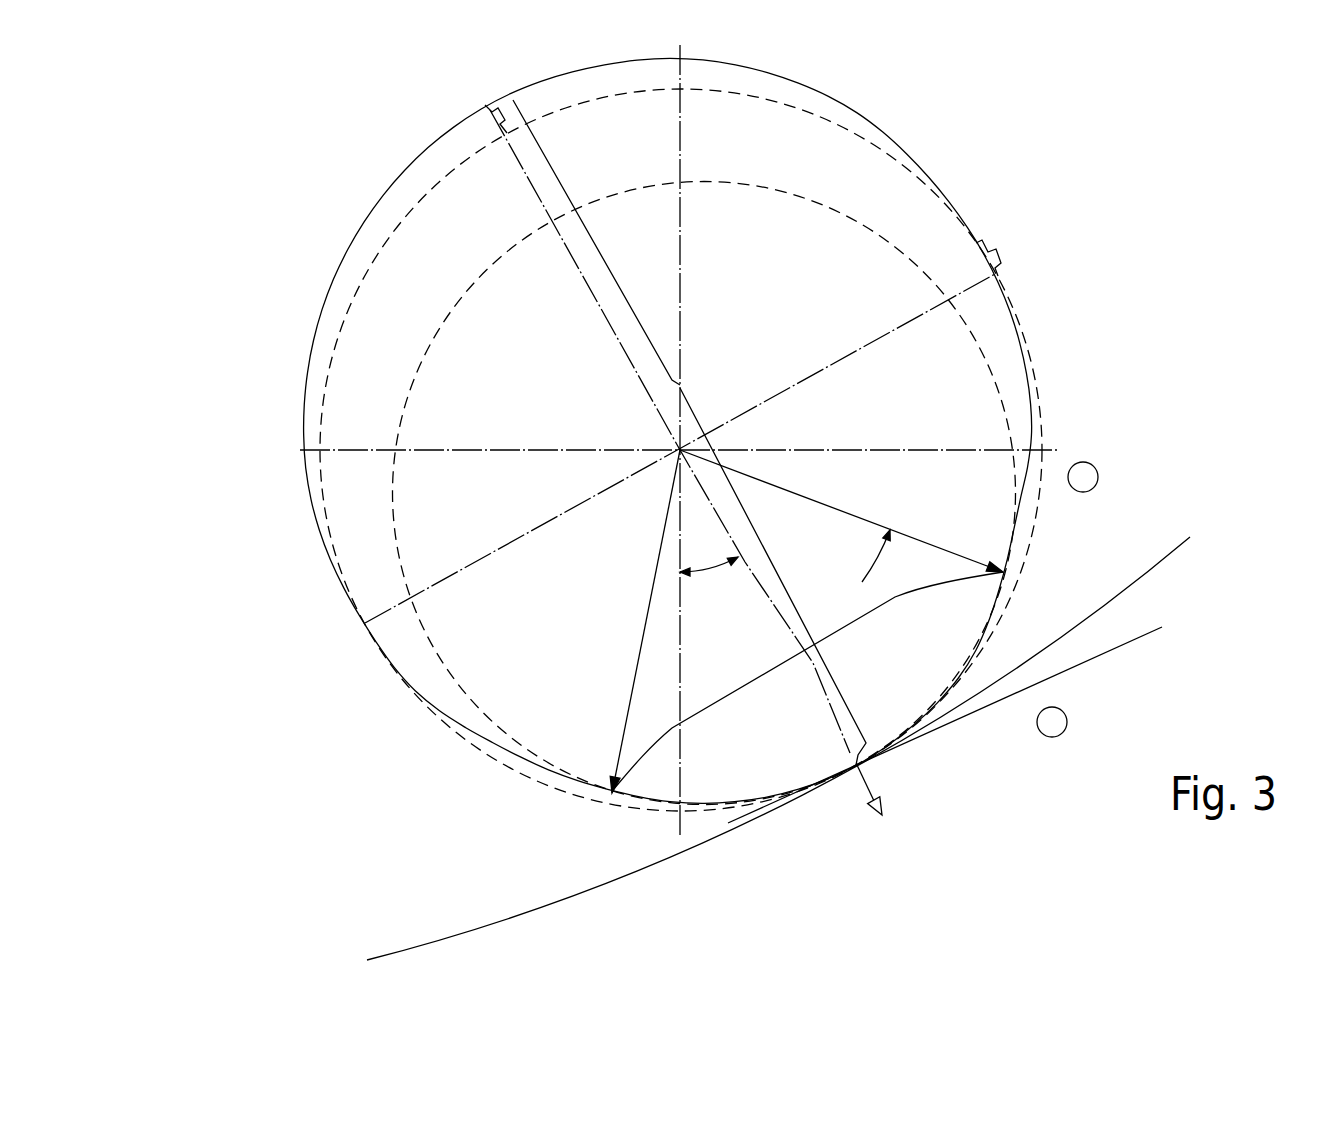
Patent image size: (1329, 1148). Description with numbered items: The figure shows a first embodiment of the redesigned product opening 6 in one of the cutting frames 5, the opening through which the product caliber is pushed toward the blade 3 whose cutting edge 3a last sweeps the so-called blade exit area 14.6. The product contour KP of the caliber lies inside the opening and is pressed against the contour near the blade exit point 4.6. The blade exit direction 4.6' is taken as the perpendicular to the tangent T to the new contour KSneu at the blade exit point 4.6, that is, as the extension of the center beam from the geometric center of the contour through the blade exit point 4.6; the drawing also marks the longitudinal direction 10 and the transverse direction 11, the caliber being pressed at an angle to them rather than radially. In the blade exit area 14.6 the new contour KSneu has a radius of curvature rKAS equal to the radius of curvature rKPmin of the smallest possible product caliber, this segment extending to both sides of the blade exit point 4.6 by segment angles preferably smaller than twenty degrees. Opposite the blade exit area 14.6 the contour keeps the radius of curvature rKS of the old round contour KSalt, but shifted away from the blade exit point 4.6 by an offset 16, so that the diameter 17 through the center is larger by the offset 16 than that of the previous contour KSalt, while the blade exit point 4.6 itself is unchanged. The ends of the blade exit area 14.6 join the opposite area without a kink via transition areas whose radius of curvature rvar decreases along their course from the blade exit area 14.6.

The product opening 6 is at (860, 112).
The offset 16 is at (499, 124).
The diameter 17 is at (677, 383).
The longitudinal direction 10 is at (678, 449).
The transverse direction 11 is at (770, 610).
The blade exit area 14.6 is at (750, 684).
The blade exit point 4.6 is at (773, 577).
The blade exit direction 4.6' is at (902, 790).
The blade 3 is at (1083, 477).
The cutting frame 5 is at (1052, 722).
The cutting edge 3a is at (1127, 587).
The tangent T is at (1133, 638).
The product contour KP is at (737, 184).
The old contour KSalt is at (345, 313).
The new roller contour KSneu is at (1029, 372).
The radius of curvature of the old contour rKS is at (423, 152).
The radius of curvature of the smallest product caliber rKPmin is at (467, 297).
The radius of curvature in the blade exit area rKAS is at (990, 617).
The decreasing radius of curvature rvar is at (1037, 398).